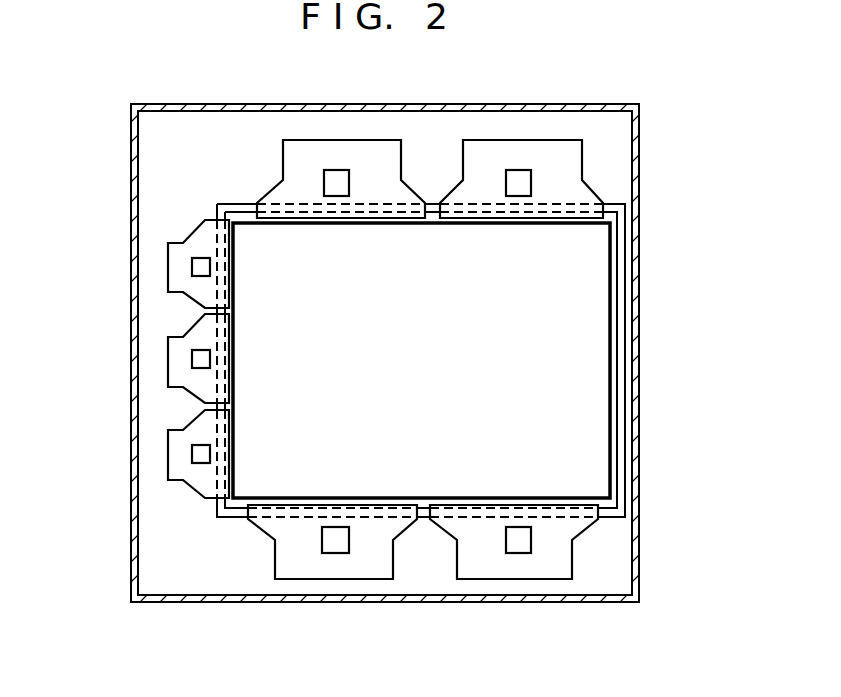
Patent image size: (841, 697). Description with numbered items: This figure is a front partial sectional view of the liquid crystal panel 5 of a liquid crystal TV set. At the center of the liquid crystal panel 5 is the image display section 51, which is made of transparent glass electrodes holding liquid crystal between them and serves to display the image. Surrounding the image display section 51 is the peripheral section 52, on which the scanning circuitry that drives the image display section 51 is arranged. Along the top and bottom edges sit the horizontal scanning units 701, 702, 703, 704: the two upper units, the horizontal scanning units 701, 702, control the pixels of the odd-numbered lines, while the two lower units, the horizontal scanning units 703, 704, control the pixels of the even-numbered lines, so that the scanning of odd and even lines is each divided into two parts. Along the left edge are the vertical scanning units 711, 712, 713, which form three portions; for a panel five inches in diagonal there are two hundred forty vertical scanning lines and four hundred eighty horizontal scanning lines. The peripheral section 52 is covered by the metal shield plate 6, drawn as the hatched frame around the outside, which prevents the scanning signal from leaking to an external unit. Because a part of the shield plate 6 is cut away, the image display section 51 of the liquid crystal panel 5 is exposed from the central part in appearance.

The liquid crystal panel 5 is at (185, 577).
The metal shield plate 6 is at (642, 190).
The image display section 51 is at (588, 352).
The peripheral section 52 is at (618, 568).
The horizontal scanning unit 701 is at (337, 178).
The horizontal scanning unit 702 is at (523, 178).
The horizontal scanning unit 703 is at (337, 553).
The horizontal scanning unit 704 is at (520, 553).
The vertical scanning unit 711 is at (193, 272).
The vertical scanning unit 712 is at (193, 360).
The vertical scanning unit 713 is at (193, 452).